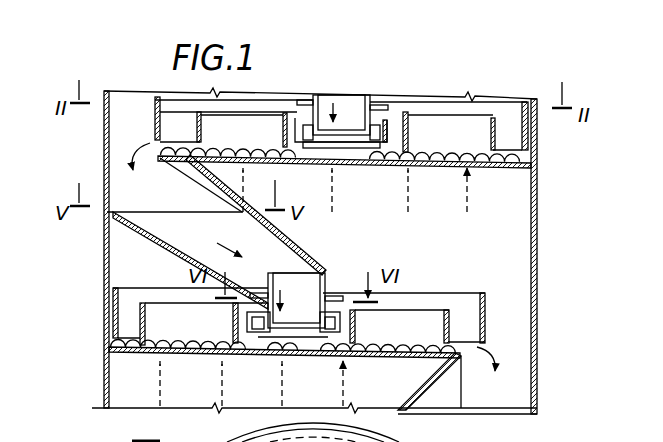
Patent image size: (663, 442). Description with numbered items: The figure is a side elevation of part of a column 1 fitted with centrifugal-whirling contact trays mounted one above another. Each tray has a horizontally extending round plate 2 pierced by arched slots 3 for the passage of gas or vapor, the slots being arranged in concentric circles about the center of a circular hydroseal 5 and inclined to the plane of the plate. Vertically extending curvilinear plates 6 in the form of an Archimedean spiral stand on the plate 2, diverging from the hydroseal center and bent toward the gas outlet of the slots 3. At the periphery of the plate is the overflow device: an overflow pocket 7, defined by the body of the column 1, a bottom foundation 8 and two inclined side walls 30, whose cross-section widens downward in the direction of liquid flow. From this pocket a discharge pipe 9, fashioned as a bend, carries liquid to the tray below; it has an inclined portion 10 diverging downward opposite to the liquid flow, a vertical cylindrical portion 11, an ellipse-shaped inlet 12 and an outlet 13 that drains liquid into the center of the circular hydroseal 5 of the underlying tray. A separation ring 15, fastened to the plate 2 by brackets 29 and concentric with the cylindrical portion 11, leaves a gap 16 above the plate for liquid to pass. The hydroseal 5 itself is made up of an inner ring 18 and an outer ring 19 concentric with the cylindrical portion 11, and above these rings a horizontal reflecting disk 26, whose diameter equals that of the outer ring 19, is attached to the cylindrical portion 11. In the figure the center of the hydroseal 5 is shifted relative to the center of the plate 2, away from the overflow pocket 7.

The column 1 is at (552, 168).
The round plate 2 is at (459, 166).
The arched slots 3 is at (386, 160).
The circular hydroseal 5 is at (390, 126).
The curvilinear plates 6 is at (500, 120).
The overflow pocket 7 is at (118, 158).
The bottom foundation 8 is at (113, 215).
The discharge pipe 9 is at (303, 247).
The inclined portion 10 is at (173, 236).
The cylindrical portion 11 is at (236, 325).
The ellipse-shaped inlet 12 is at (205, 213).
The outlet 13 is at (275, 354).
The separation ring 15 is at (156, 118).
The gap 16 is at (525, 155).
The inner ring 18 is at (376, 150).
The outer ring 19 is at (392, 131).
The reflecting disk 26 is at (383, 112).
The brackets 29 is at (197, 148).
The inclined side walls 30 is at (187, 178).